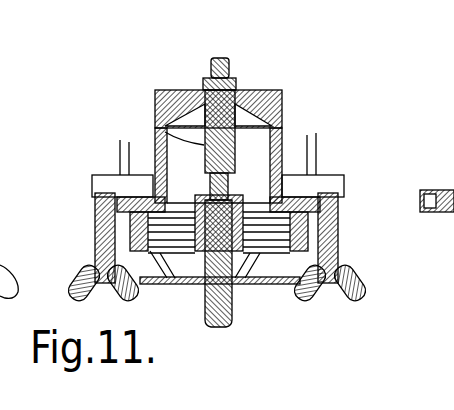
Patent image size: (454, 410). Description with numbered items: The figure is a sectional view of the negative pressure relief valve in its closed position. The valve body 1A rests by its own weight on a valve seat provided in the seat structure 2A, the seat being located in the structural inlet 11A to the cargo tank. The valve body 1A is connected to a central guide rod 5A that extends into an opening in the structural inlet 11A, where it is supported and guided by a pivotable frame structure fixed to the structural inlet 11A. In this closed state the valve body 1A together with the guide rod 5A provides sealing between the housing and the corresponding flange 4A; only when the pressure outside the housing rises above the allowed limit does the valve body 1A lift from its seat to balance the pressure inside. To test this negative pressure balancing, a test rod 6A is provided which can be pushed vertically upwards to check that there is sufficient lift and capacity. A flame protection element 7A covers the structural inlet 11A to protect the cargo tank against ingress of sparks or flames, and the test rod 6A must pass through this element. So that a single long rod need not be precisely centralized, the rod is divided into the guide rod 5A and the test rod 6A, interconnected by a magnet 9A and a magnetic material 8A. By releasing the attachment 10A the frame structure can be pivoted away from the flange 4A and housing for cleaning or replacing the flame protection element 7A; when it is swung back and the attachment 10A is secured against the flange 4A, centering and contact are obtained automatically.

The valve body 1A is at (285, 100).
The seat structure 2A is at (284, 143).
The flange 4A is at (342, 184).
The central guide rod 5A is at (157, 122).
The test rod 6A is at (229, 302).
The flame protection element 7A is at (345, 253).
The magnetic material 8A is at (200, 197).
The magnet 9A is at (147, 193).
The attachment 10A is at (92, 252).
The structural inlet 11A is at (343, 233).